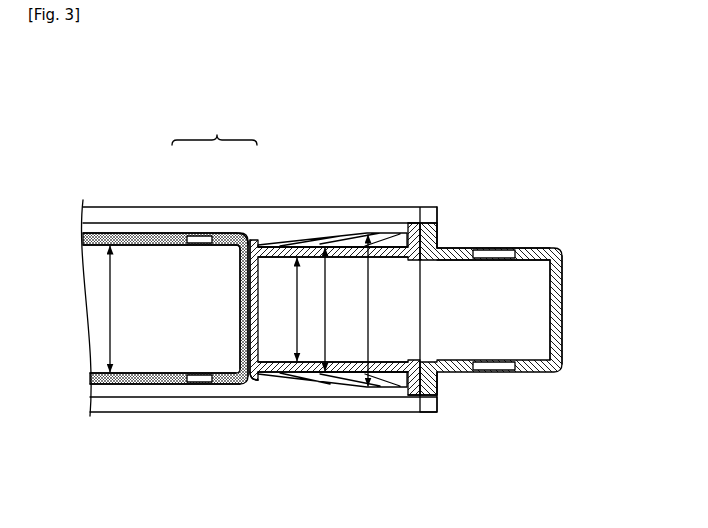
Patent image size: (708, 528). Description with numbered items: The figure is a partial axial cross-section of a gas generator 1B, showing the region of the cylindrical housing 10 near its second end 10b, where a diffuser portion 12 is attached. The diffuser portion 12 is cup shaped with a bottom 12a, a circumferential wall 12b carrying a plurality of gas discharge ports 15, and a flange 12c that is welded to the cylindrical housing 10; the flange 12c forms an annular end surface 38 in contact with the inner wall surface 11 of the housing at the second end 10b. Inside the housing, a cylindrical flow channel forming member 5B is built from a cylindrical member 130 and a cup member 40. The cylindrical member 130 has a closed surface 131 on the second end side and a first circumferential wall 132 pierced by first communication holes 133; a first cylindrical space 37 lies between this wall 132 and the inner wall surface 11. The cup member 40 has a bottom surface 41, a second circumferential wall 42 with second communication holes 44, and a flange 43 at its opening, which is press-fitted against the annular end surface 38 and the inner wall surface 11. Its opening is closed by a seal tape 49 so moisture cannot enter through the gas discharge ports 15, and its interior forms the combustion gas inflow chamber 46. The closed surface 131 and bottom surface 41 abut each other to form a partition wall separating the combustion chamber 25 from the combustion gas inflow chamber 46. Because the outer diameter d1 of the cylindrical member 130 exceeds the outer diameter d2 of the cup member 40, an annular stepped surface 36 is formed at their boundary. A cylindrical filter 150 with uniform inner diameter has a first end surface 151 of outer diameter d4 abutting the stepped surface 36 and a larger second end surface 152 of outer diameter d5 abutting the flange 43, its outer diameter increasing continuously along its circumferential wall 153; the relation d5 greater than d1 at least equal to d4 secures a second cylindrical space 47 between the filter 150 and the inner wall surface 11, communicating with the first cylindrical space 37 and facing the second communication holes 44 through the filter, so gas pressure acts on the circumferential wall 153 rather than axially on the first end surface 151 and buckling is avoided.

The gas generator 1B is at (345, 193).
The cylindrical flow channel forming member 5B is at (214, 126).
The cylindrical housing 10 is at (419, 211).
The second end 10b is at (440, 405).
The inner wall surface 11 is at (325, 240).
The diffuser portion 12 is at (533, 299).
The bottom 12a is at (562, 318).
The circumferential wall 12b is at (543, 247).
The flange 12c is at (432, 246).
The gas discharge ports 15 is at (500, 372).
The combustion chamber 25 is at (165, 309).
The annular stepped surface 36 is at (256, 382).
The first cylindrical space 37 is at (183, 386).
The annular end surface 38 is at (424, 264).
The cup member 40 is at (358, 332).
The bottom surface 41 is at (282, 342).
The circumferential wall 42 is at (310, 388).
The flange 43 is at (413, 396).
The second communication holes 44 is at (330, 257).
The combustion gas inflow chamber 46 is at (339, 309).
The second cylindrical space 47 is at (345, 389).
The seal tape 49 is at (423, 312).
The cylindrical member 130 is at (165, 312).
The closed surface 131 is at (240, 332).
The circumferential wall 132 is at (226, 384).
The first communication holes 133 is at (200, 373).
The cylindrical filter 150 is at (348, 238).
The first end surface 151 is at (240, 249).
The second end surface 152 is at (440, 222).
The circumferential wall 153 is at (316, 389).
The outer diameter of the cylindrical member d1 is at (107, 309).
The outer diameter of the cup member d2 is at (324, 309).
The outer diameter of the first end surface d4 is at (296, 309).
The outer diameter of the second end surface d5 is at (367, 310).